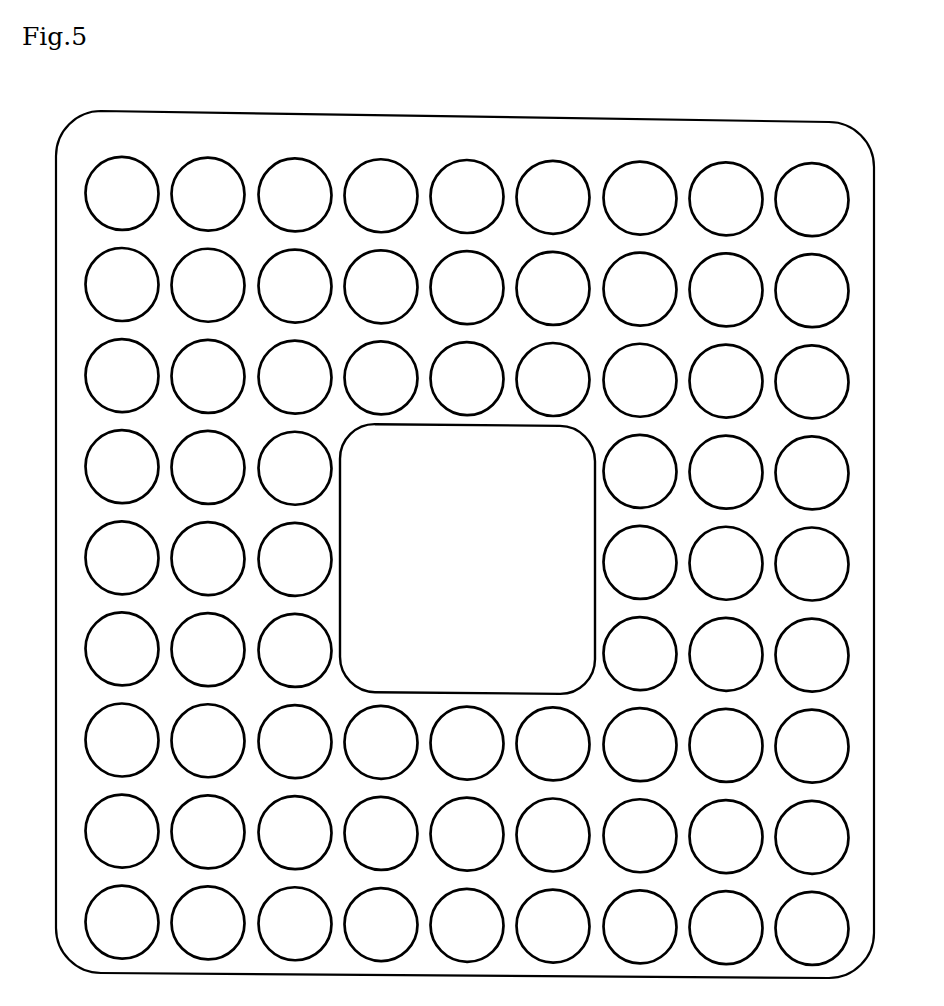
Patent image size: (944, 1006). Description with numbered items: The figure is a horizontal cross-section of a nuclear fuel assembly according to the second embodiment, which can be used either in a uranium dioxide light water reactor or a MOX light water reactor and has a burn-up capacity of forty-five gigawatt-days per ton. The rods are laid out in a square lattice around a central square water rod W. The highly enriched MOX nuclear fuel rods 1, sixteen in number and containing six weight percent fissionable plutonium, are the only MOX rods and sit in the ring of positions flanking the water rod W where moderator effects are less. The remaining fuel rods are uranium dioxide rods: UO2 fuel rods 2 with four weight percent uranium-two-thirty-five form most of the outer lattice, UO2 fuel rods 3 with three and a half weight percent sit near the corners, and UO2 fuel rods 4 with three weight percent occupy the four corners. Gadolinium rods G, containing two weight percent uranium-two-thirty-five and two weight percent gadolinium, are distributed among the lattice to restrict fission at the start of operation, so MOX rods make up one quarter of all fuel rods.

The highly enriched MOX nuclear fuel rods 1 is at (467, 560).
The UO2 fuel rods 2 is at (467, 561).
The UO2 fuel rods 3 is at (467, 561).
The UO2 fuel rods 4 is at (467, 561).
The gadolinium rods G is at (467, 560).
The water rod W is at (467, 559).